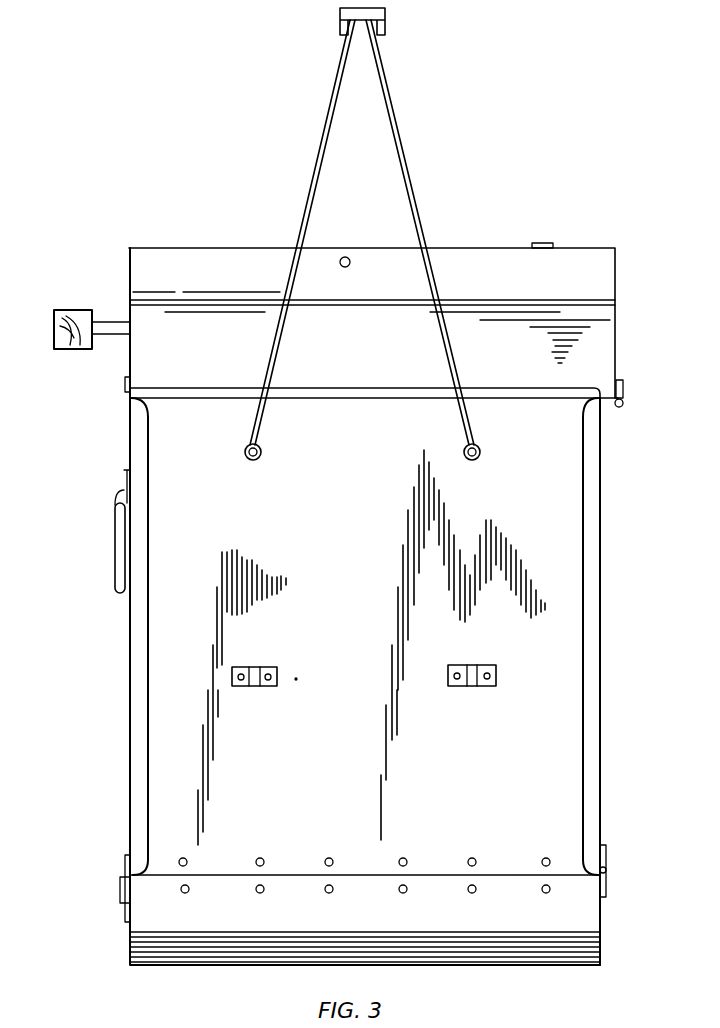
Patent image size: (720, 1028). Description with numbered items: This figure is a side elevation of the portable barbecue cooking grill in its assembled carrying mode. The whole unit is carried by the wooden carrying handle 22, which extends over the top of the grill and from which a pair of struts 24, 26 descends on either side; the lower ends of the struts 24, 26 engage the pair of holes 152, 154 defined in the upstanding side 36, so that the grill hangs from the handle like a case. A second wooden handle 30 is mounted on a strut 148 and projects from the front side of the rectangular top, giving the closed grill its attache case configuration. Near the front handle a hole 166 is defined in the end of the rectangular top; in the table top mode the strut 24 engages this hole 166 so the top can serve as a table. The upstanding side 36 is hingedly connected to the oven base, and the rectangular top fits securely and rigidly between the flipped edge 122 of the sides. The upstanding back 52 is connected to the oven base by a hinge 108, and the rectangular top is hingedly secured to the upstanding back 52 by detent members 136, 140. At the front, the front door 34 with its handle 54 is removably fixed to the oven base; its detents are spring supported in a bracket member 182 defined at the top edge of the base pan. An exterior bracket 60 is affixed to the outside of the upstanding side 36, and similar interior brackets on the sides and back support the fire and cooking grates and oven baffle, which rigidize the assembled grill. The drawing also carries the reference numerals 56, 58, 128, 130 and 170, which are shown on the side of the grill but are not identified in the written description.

The wooden carrying handle 22 is at (388, 14).
The strut 24 is at (318, 163).
The strut 26 is at (398, 148).
The wooden handle 30 is at (55, 330).
The front door 34 is at (133, 796).
The upstanding side 36 is at (343, 549).
The upstanding back 52 is at (595, 603).
The handle 54 is at (115, 563).
The left bracket block 56 is at (252, 665).
The right bracket block 58 is at (470, 665).
The exterior bracket 60 is at (314, 670).
The hinge 108 is at (606, 870).
The flipped edge 122 is at (332, 398).
The right inner liner 128 is at (586, 455).
The left inner liner 130 is at (137, 653).
The detent member 136 is at (624, 388).
The detent member 140 is at (624, 404).
The strut 148 is at (100, 322).
The hole 152 is at (250, 462).
The hole 154 is at (478, 462).
The hole 166 is at (348, 257).
The left latch hook 170 is at (125, 385).
The bracket member 182 is at (120, 890).